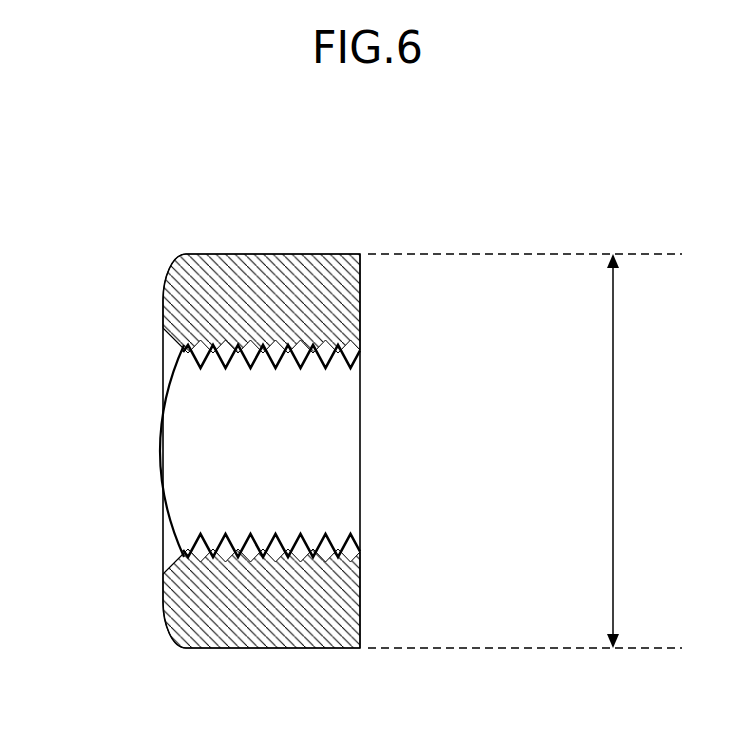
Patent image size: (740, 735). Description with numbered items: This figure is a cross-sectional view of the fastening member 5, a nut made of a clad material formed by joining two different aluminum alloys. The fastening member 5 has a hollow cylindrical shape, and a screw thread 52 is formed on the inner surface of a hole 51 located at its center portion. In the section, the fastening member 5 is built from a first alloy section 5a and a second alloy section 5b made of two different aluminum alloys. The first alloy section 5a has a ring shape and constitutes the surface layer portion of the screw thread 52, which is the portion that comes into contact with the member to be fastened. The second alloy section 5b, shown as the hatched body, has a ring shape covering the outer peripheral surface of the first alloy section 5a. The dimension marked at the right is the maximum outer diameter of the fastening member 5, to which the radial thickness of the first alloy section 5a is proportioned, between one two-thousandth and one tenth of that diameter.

The fastening member 5 is at (434, 172).
The first alloy section 5a is at (360, 348).
The second alloy section 5b is at (246, 290).
The hole 51 is at (218, 449).
The screw thread 52 is at (244, 372).